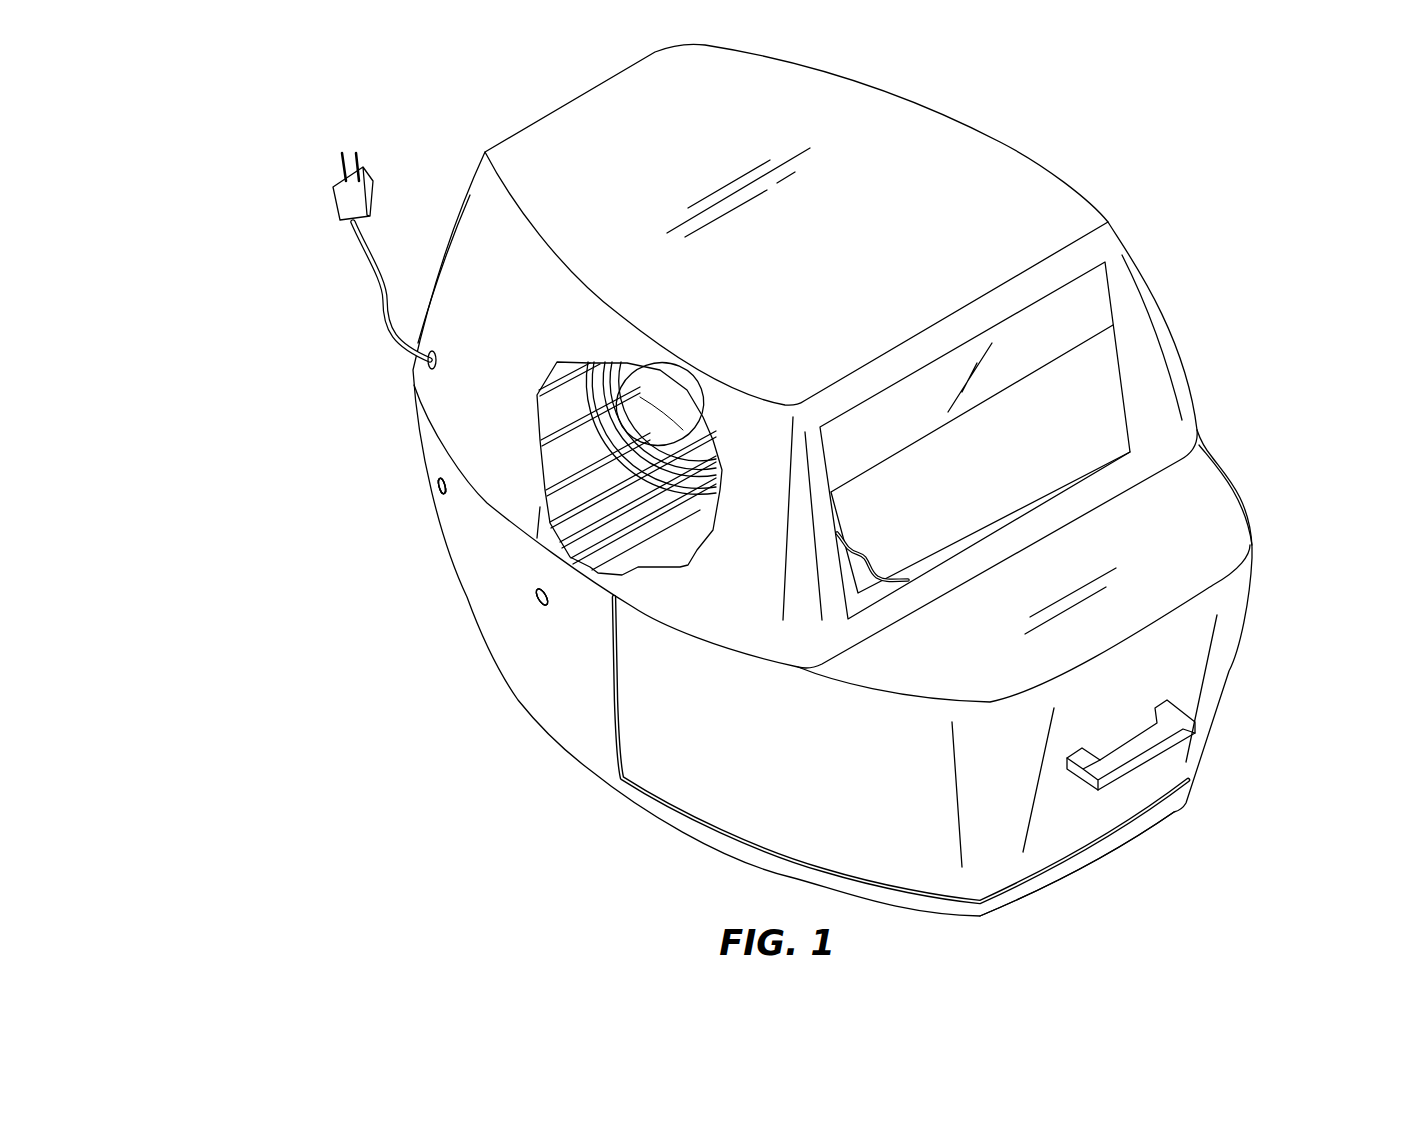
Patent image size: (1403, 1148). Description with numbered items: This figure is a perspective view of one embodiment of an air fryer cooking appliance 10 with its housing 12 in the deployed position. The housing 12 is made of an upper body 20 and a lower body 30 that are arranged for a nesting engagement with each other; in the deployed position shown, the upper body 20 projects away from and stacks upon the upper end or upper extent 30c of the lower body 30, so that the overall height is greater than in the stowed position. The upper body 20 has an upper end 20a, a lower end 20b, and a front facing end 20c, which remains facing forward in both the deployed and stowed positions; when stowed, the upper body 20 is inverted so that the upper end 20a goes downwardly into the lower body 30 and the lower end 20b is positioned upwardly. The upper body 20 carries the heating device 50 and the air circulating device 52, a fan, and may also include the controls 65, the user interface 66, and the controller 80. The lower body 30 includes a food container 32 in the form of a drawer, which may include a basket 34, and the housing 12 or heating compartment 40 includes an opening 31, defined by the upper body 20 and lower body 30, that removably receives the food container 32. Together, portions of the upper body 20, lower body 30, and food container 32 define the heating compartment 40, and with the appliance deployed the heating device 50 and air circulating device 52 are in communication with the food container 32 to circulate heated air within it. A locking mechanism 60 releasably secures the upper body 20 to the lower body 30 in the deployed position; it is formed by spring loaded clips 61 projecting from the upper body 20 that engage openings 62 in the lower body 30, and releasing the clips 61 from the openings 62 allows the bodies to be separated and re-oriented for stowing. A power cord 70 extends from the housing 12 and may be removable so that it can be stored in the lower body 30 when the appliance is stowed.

The air fryer cooking appliance 10 is at (285, 200).
The housing 12 is at (360, 426).
The upper body 20 is at (460, 240).
The upper end 20a is at (928, 177).
The lower end 20b is at (1168, 465).
The front facing end 20c is at (1152, 379).
The lower body 30 is at (466, 626).
The upper extent 30c is at (903, 672).
The opening 31 is at (626, 690).
The food container 32 is at (938, 840).
The basket 34 is at (640, 544).
The heating compartment 40 is at (622, 530).
The heating device 50 is at (706, 512).
The air circulating device 52 is at (683, 413).
The locking mechanism 60 is at (520, 600).
The spring loaded clips 61 is at (438, 487).
The openings 62 is at (540, 593).
The controls 65 is at (1140, 310).
The user interface 66 is at (968, 450).
The power cord 70 is at (365, 311).
The controller 80 is at (862, 577).